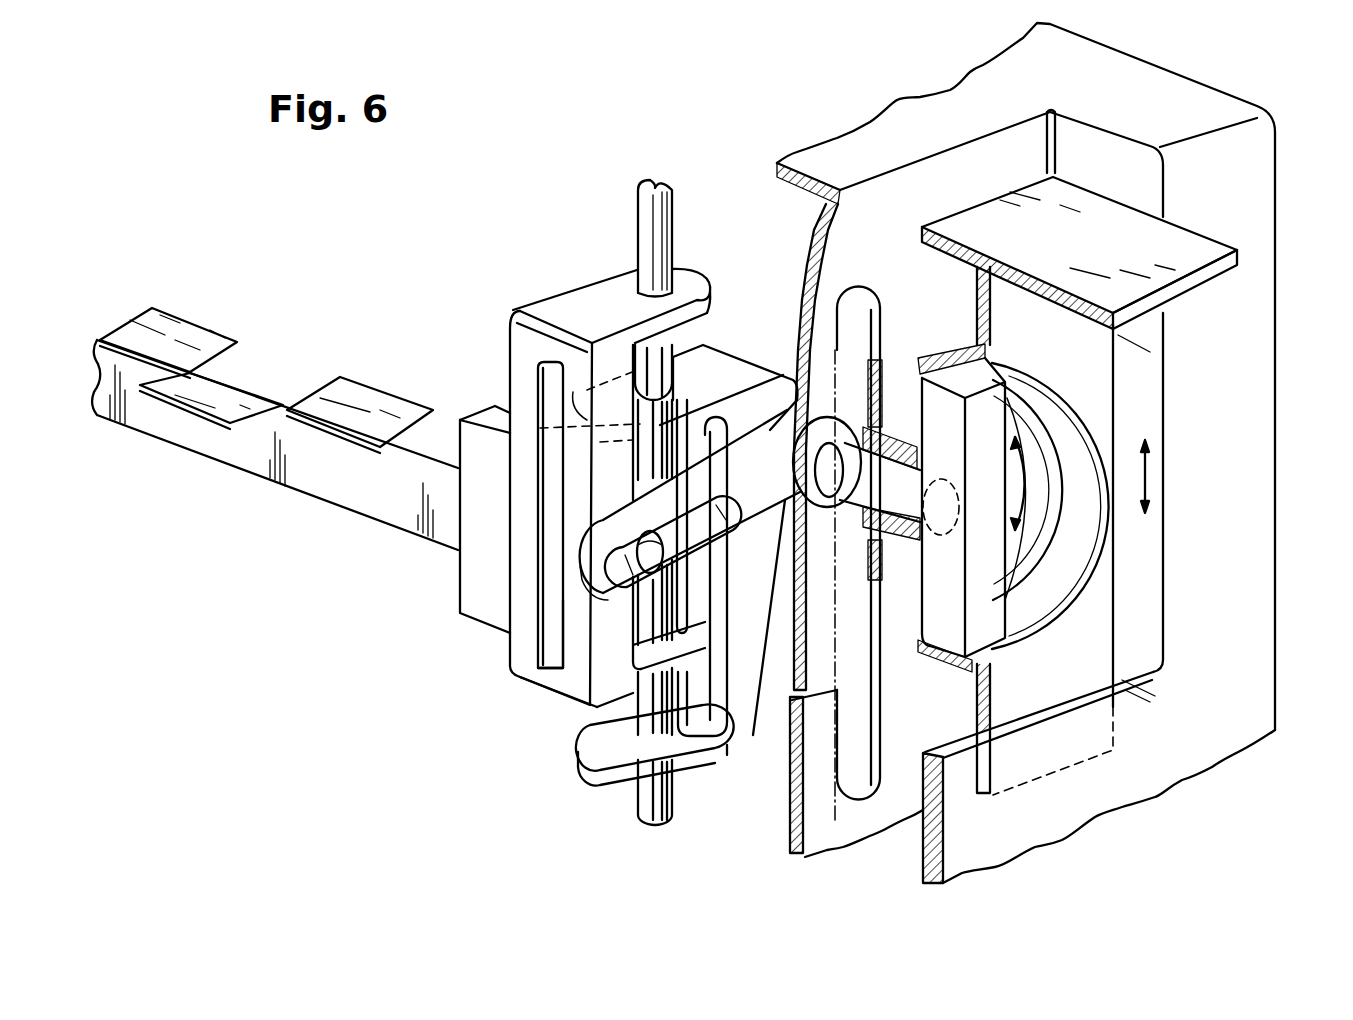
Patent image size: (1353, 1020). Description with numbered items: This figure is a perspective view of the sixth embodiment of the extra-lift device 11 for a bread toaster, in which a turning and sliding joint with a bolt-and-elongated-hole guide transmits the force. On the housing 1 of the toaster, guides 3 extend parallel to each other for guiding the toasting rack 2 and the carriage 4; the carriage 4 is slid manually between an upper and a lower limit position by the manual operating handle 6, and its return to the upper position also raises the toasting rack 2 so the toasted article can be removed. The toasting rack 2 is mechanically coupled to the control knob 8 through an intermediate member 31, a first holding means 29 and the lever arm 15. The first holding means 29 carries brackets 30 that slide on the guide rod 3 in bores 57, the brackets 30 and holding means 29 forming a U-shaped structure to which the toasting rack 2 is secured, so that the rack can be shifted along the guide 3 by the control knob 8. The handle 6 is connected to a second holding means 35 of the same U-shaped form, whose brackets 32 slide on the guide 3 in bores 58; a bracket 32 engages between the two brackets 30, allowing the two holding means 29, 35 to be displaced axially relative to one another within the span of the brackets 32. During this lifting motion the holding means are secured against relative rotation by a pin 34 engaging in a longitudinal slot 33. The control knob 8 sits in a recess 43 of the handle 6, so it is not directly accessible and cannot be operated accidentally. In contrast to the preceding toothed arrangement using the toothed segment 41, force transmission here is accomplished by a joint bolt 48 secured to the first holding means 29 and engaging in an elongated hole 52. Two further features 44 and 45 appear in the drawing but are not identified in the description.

The housing 1 is at (1262, 140).
The toasting rack 2 is at (237, 453).
The guide rod 3 is at (638, 192).
The carriage 4 is at (780, 705).
The manual operating handle 6 is at (1215, 245).
The control knob 8 is at (993, 600).
The extra-lift device 11 is at (525, 690).
The lever arm 15 is at (835, 530).
The first holding means 29 is at (522, 365).
The brackets 30 is at (620, 290).
The intermediate member 31 is at (477, 573).
The brackets 32 is at (600, 745).
The longitudinal slot 33 is at (552, 638).
The pin 34 is at (517, 415).
The second holding means 35 is at (765, 368).
The toothed segment 41 is at (637, 540).
The recess 43 is at (1055, 398).
The slot 44 is at (875, 318).
The hole 45 is at (1047, 145).
The joint bolt 48 is at (680, 598).
The elongated hole 52 is at (710, 533).
The bores 57 is at (672, 292).
The bores 58 is at (718, 368).